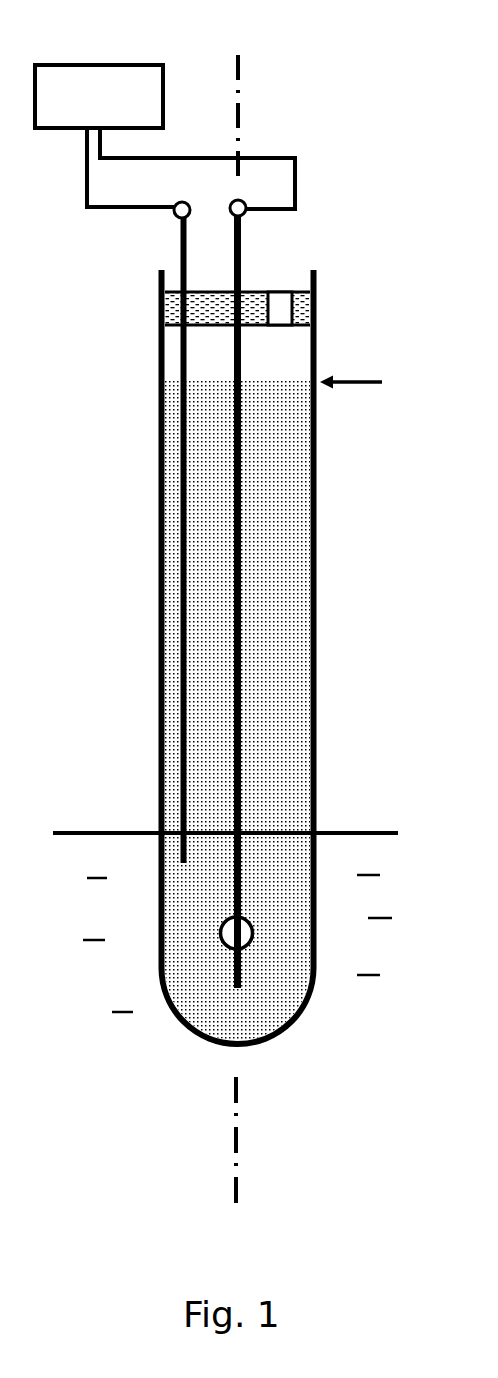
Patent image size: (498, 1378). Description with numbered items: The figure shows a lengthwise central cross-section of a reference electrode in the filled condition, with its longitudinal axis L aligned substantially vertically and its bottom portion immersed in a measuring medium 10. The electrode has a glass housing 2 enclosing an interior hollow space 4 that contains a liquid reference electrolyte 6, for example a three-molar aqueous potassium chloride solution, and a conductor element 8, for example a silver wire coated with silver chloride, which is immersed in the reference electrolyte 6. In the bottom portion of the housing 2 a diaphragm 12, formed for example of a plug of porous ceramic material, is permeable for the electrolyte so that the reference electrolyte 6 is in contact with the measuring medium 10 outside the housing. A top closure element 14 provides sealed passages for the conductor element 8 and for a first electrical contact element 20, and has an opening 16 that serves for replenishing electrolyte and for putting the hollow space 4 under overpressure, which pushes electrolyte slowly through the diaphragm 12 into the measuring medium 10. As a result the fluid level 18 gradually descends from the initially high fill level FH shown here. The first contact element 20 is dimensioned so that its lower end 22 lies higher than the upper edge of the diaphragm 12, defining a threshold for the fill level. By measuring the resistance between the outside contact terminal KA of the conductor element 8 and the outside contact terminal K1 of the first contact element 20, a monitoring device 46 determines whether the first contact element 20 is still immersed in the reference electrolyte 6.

The glass housing 2 is at (158, 650).
The interior hollow space 4 is at (282, 355).
The liquid reference electrolyte 6 is at (277, 565).
The conductor element 8 is at (240, 673).
The measuring medium 10 is at (345, 852).
The diaphragm 12 is at (243, 937).
The top closure element 14 is at (263, 287).
The opening 16 is at (277, 297).
The fluid level 18 is at (213, 378).
The first electrical contact element 20 is at (180, 517).
The lower end of first contact element 22 is at (158, 827).
The monitoring device 46 is at (130, 85).
The outside contact terminal of the first contact element K1 is at (175, 212).
The outside contact terminal of the conductor element KA is at (246, 205).
The longitudinal axis L is at (242, 113).
The high fill level FH is at (369, 387).